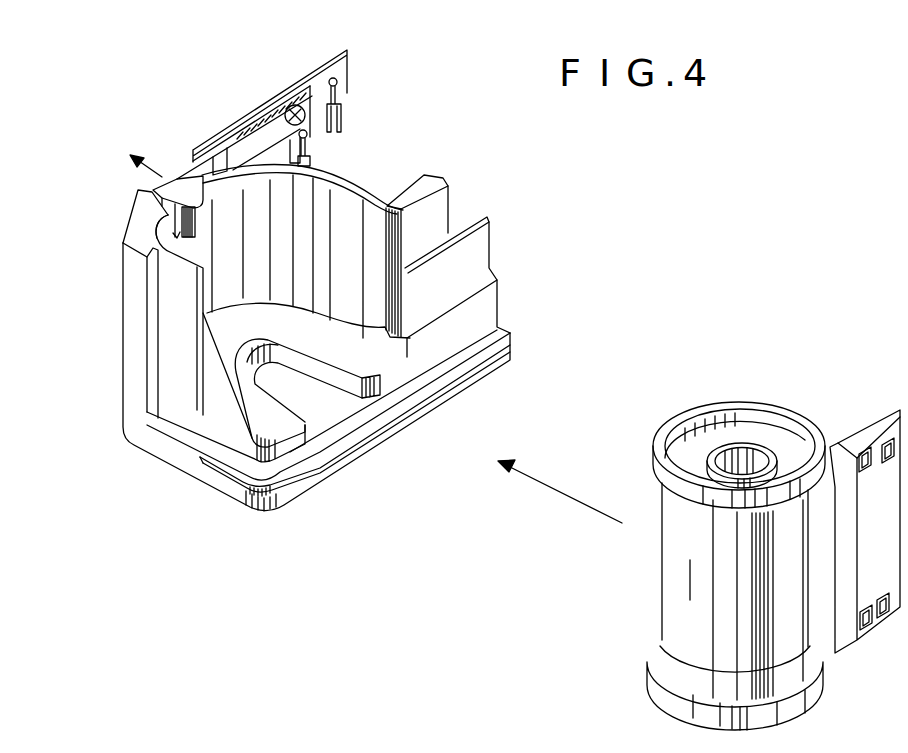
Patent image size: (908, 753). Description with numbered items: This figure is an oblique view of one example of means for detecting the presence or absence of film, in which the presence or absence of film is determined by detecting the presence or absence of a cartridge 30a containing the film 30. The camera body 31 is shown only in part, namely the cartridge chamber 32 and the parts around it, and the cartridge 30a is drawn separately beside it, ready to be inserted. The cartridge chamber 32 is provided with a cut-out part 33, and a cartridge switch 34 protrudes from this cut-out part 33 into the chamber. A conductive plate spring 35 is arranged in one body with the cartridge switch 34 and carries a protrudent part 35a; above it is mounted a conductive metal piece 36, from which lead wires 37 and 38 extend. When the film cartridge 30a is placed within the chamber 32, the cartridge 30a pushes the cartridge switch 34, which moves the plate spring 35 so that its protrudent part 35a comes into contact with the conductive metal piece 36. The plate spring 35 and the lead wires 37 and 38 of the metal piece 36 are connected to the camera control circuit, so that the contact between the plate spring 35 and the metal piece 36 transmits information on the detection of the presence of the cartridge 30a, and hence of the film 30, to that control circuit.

The film 30 is at (815, 408).
The cartridge 30a is at (680, 594).
The camera body 31 is at (137, 311).
The cartridge chamber 32 is at (283, 233).
The cut-out part 33 is at (178, 237).
The cartridge switch 34 is at (177, 217).
The conductive plate spring 35 is at (251, 143).
The protrudent part 35a is at (222, 146).
The conductive metal piece 36 is at (206, 139).
The lead wire 37 is at (308, 163).
The lead wire 38 is at (343, 121).